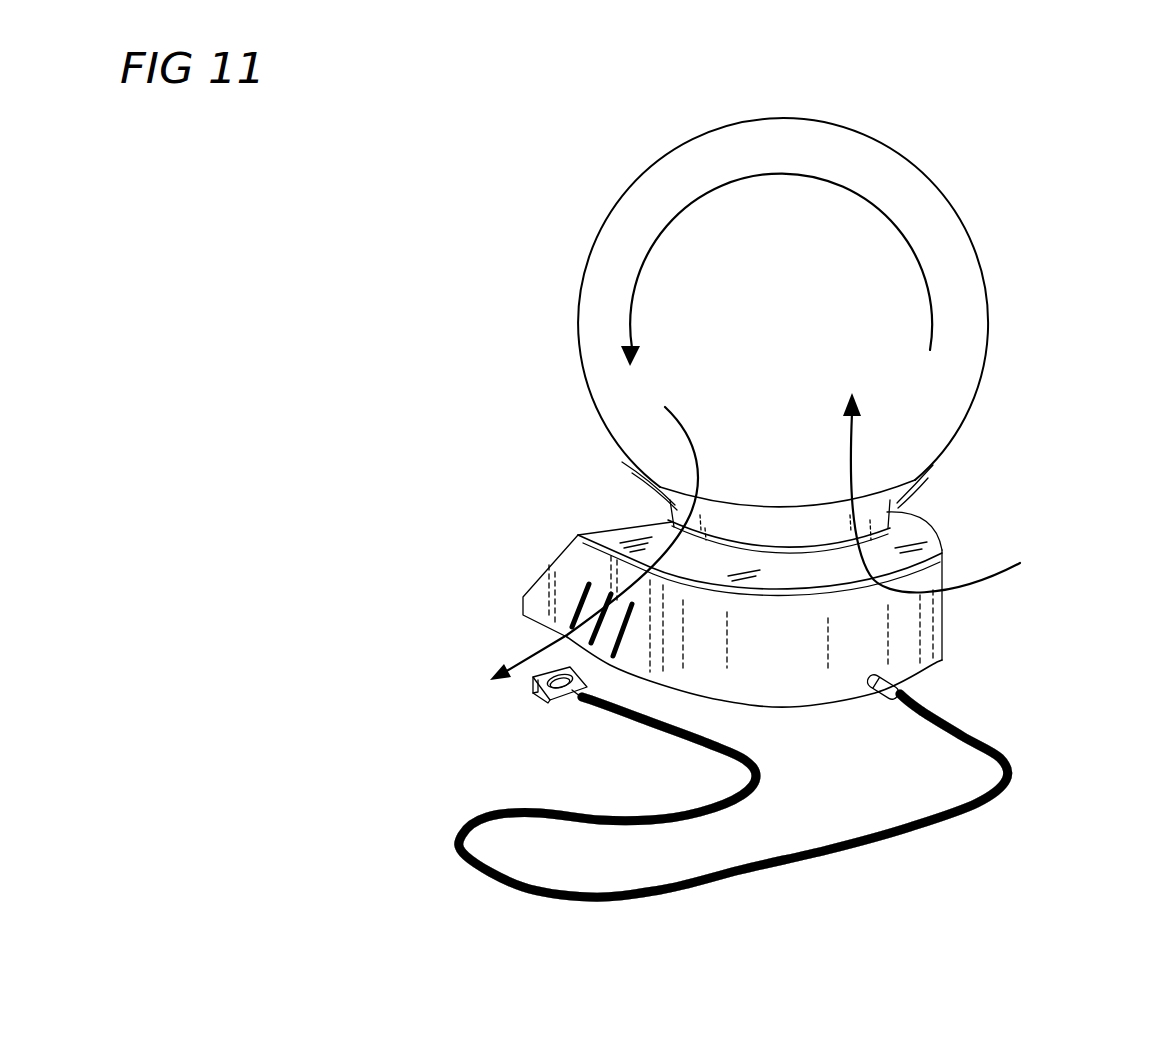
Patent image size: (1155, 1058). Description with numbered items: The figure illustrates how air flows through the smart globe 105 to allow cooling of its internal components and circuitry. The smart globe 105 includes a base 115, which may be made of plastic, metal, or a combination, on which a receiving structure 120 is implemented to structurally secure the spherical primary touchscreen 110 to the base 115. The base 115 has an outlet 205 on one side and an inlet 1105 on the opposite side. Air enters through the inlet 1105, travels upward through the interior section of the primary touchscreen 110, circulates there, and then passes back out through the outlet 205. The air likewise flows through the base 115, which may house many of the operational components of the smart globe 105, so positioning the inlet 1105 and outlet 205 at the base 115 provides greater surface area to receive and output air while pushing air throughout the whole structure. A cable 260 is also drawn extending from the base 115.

The smart globe 105 is at (1014, 148).
The primary touchscreen 110 is at (985, 288).
The base 115 is at (572, 540).
The receiving structure 120 is at (643, 492).
The outlet 205 is at (550, 561).
The inlet 1105 is at (947, 492).
The cable 260 is at (1000, 756).